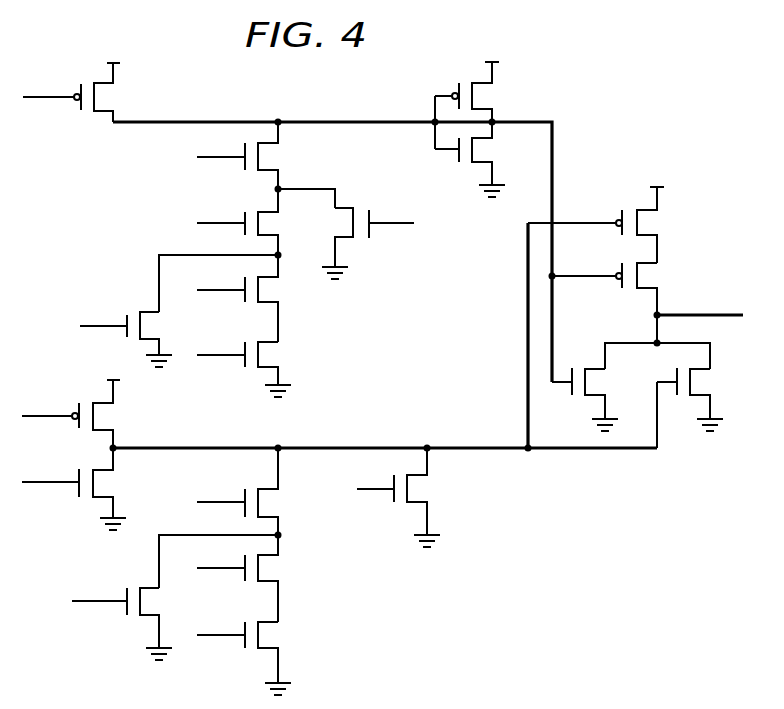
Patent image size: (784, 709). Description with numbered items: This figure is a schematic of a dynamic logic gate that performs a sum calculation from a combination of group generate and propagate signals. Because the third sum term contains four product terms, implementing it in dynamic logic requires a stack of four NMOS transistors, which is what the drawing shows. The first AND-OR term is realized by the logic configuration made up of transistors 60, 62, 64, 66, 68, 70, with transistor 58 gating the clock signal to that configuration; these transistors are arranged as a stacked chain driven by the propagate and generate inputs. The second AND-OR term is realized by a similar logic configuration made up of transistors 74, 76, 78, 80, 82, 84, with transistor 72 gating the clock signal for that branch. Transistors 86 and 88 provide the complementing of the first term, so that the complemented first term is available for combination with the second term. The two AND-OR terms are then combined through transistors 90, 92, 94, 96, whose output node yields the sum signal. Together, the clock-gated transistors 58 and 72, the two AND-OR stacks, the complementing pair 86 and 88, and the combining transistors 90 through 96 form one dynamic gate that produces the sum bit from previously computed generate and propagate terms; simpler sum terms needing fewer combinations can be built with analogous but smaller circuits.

The transistor 58 is at (96, 97).
The transistor 60 is at (260, 157).
The transistor 62 is at (260, 223).
The transistor 64 is at (345, 212).
The transistor 66 is at (148, 310).
The transistor 68 is at (260, 290).
The transistor 70 is at (260, 355).
The transistor 72 is at (95, 417).
The transistor 74 is at (95, 483).
The transistor 76 is at (145, 617).
The transistor 78 is at (260, 503).
The transistor 80 is at (260, 569).
The transistor 82 is at (260, 636).
The transistor 84 is at (409, 490).
The transistor 86 is at (474, 97).
The transistor 88 is at (474, 150).
The transistor 90 is at (639, 224).
The transistor 92 is at (639, 277).
The transistor 94 is at (602, 367).
The transistor 96 is at (692, 383).